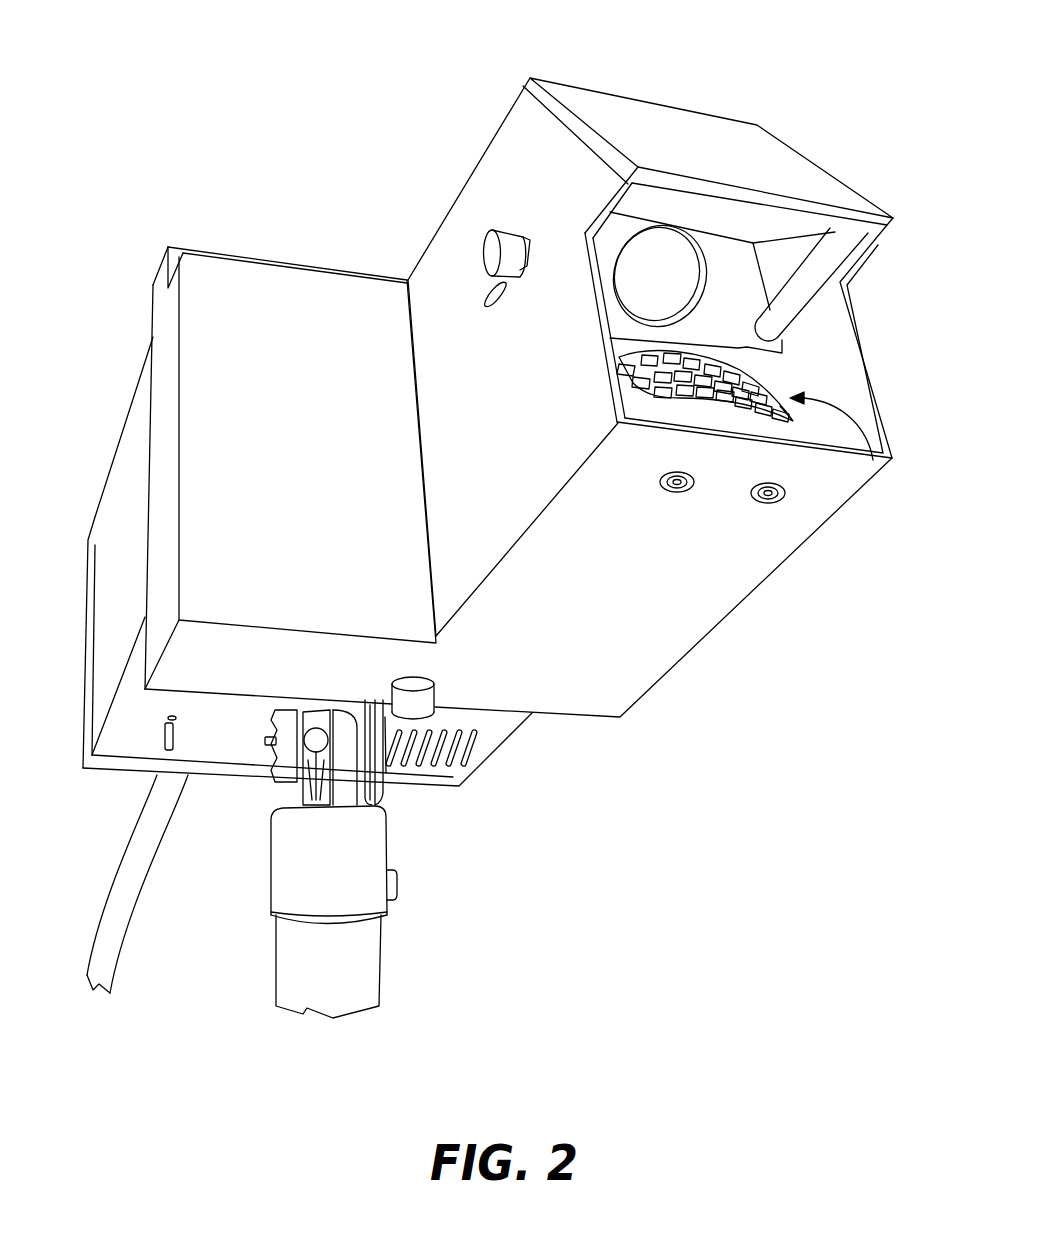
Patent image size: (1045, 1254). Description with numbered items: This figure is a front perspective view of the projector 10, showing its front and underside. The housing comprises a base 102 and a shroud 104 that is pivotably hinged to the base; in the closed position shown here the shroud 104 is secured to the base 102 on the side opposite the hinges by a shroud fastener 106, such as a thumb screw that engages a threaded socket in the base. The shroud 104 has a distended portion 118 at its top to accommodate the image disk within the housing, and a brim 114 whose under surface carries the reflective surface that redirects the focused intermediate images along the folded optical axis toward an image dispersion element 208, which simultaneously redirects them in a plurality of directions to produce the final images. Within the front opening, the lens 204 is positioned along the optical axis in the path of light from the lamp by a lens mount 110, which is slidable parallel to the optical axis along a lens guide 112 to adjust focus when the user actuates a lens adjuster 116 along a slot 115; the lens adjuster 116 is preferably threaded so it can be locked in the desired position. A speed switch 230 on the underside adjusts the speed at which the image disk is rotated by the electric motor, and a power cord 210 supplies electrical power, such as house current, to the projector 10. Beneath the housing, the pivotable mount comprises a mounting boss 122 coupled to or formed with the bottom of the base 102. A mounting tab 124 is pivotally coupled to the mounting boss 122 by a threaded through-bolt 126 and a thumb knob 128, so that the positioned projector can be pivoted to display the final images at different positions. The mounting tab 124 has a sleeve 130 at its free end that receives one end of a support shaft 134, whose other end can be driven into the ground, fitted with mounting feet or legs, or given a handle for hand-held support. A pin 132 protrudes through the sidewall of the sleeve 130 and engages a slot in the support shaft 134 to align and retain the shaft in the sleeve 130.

The projector 10 is at (258, 130).
The base 102 is at (148, 455).
The shroud 104 is at (497, 176).
The shroud fastener 106 is at (424, 693).
The lens mount 110 is at (753, 335).
The lens guide 112 is at (790, 282).
The brim 114 is at (735, 162).
The slot 115 is at (485, 302).
The lens adjuster 116 is at (490, 248).
The distended portion 118 is at (173, 238).
The mounting boss 122 is at (379, 786).
The mounting tab 124 is at (322, 797).
The threaded through-bolt 126 is at (265, 746).
The thumb knob 128 is at (300, 765).
The sleeve 130 is at (303, 908).
The pin 132 is at (395, 883).
The support shaft 134 is at (288, 983).
The lens 204 is at (635, 285).
The image dispersion element 208 is at (847, 462).
The power cord 210 is at (136, 853).
The speed switch 230 is at (176, 740).